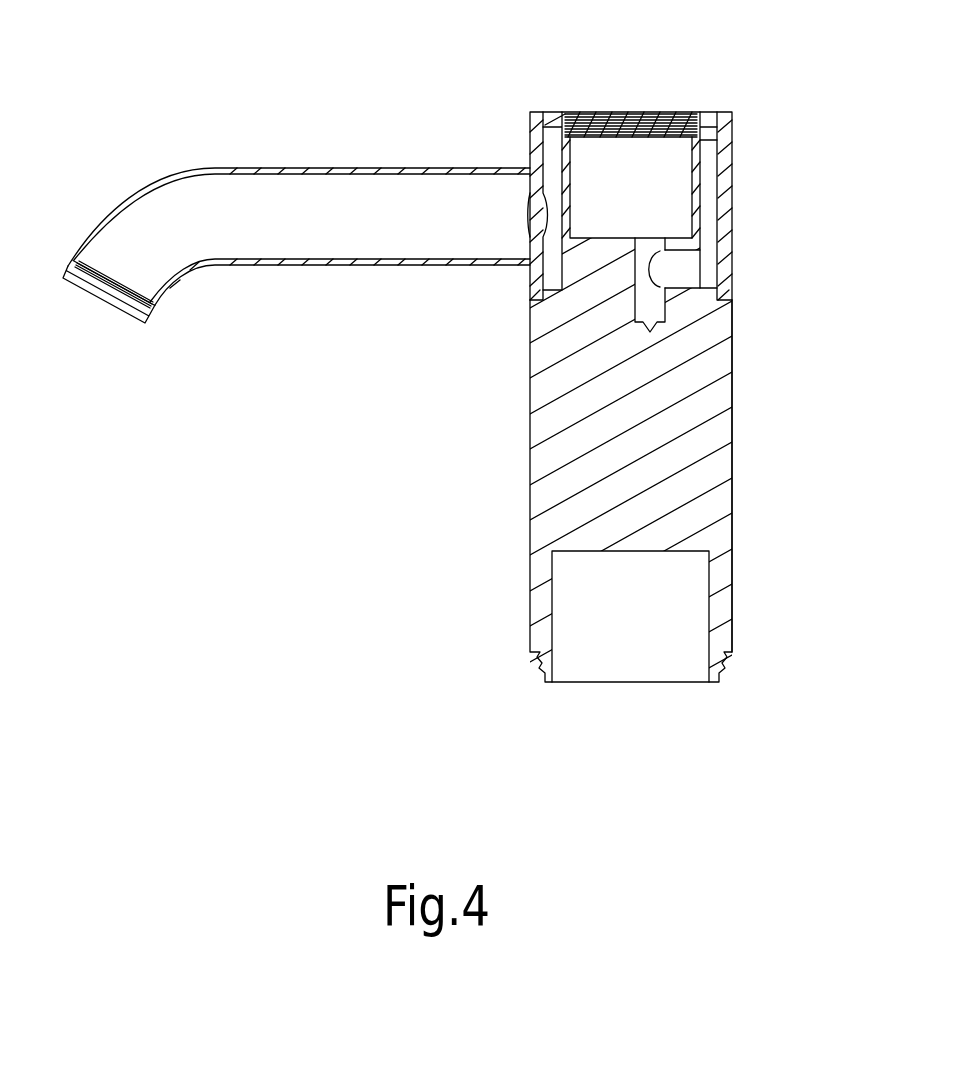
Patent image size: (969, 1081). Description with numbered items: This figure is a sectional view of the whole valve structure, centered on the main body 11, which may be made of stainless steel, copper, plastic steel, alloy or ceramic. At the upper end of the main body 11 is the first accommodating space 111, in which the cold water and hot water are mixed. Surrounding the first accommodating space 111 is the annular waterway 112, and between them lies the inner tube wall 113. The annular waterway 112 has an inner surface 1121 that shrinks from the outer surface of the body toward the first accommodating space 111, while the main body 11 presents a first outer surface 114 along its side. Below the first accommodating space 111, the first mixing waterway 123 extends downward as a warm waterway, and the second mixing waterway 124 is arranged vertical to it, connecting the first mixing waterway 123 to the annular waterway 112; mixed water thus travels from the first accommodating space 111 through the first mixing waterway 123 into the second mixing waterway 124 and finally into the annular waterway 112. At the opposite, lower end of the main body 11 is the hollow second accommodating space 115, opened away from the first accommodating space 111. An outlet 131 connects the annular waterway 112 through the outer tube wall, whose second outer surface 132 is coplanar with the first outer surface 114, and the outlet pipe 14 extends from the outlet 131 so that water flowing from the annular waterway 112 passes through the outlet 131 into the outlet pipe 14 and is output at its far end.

The main body 11 is at (712, 430).
The outlet pipe 14 is at (132, 200).
The first accommodating space 111 is at (617, 160).
The annular waterway 112 is at (553, 153).
The inner surface 1121 is at (732, 135).
The inner tube wall 113 is at (693, 187).
The first outer surface 114 is at (732, 360).
The second accommodating space 115 is at (695, 588).
The first mixing waterway 123 is at (643, 310).
The second mixing waterway 124 is at (683, 272).
The outlet 131 is at (537, 210).
The second outer surface 132 is at (732, 227).